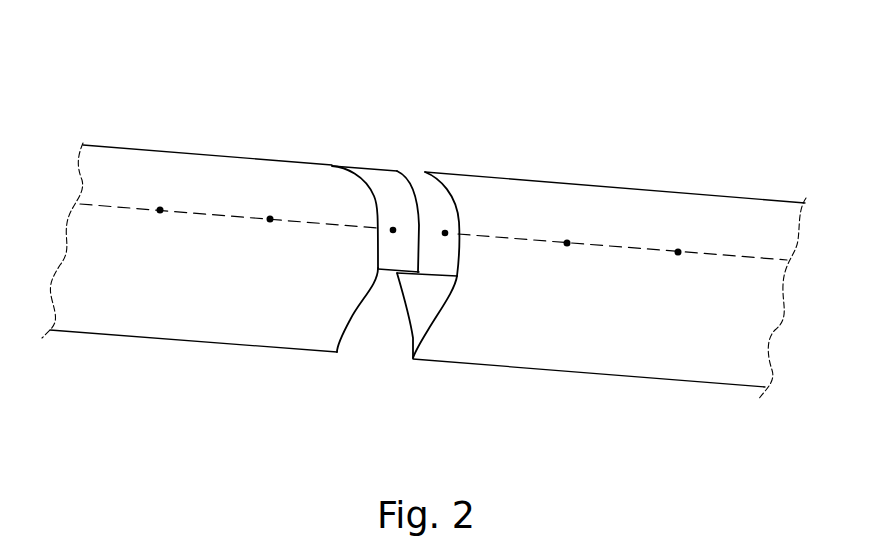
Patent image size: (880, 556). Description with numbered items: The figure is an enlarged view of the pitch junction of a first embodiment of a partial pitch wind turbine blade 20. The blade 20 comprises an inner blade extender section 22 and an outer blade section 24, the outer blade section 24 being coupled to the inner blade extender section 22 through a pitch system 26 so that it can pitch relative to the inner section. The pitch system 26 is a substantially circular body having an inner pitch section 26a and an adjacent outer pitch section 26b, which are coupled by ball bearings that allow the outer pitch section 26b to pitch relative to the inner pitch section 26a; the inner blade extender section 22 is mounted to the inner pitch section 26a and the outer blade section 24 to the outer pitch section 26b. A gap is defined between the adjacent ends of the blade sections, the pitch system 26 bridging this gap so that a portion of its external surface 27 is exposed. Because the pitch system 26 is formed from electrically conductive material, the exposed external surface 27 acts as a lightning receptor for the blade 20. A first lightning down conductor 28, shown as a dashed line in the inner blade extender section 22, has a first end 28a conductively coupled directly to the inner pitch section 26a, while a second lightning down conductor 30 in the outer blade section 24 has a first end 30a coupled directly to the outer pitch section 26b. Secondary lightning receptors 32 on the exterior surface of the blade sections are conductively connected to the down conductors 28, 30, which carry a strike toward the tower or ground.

The partial pitch wind turbine blade 20 is at (178, 87).
The inner blade extender section 22 is at (162, 303).
The outer blade section 24 is at (667, 340).
The pitch system 26 is at (379, 152).
The inner pitch section 26a is at (389, 252).
The outer pitch section 26b is at (440, 252).
The external surface 27 is at (397, 174).
The first lightning down conductor 28 is at (315, 223).
The first end 28a is at (393, 226).
The second lightning down conductor 30 is at (547, 240).
The first end 30a is at (446, 229).
The secondary lightning receptors 32 is at (160, 208).